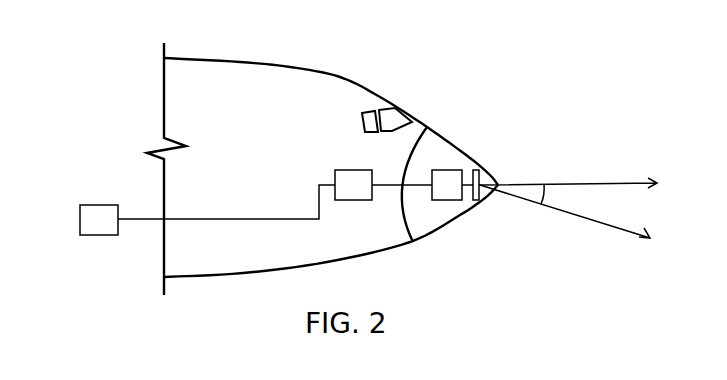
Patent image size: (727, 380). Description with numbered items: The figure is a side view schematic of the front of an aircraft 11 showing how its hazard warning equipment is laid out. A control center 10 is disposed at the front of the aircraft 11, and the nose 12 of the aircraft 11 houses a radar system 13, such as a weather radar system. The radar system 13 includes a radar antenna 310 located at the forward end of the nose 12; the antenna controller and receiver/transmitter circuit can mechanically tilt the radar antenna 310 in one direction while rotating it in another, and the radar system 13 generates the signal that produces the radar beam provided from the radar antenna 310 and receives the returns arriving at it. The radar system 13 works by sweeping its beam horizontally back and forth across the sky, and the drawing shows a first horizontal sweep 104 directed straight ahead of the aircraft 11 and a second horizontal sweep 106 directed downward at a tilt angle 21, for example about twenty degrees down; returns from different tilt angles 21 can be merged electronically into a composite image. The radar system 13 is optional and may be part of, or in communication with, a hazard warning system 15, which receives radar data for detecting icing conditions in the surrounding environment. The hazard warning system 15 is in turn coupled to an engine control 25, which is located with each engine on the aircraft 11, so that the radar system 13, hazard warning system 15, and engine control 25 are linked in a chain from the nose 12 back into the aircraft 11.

The control center 10 is at (521, 60).
The aircraft 11 is at (344, 78).
The nose 12 is at (452, 145).
The radar system 13 is at (447, 195).
The hazard warning system 15 is at (343, 176).
The engine control 25 is at (92, 210).
The radar antenna 310 is at (475, 170).
The first horizontal sweep 104 is at (603, 182).
The second horizontal sweep 106 is at (613, 228).
The tilt angle 21 is at (547, 190).